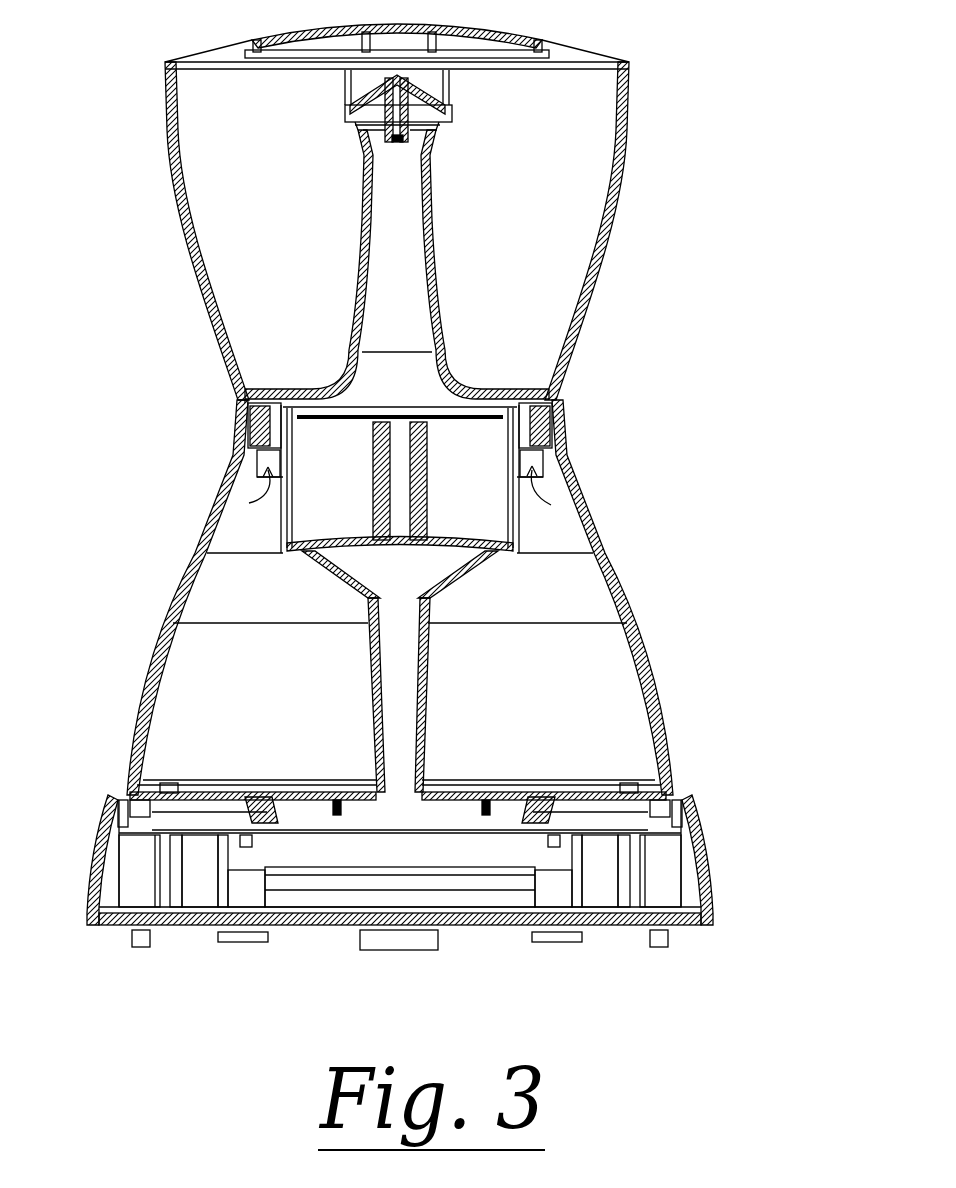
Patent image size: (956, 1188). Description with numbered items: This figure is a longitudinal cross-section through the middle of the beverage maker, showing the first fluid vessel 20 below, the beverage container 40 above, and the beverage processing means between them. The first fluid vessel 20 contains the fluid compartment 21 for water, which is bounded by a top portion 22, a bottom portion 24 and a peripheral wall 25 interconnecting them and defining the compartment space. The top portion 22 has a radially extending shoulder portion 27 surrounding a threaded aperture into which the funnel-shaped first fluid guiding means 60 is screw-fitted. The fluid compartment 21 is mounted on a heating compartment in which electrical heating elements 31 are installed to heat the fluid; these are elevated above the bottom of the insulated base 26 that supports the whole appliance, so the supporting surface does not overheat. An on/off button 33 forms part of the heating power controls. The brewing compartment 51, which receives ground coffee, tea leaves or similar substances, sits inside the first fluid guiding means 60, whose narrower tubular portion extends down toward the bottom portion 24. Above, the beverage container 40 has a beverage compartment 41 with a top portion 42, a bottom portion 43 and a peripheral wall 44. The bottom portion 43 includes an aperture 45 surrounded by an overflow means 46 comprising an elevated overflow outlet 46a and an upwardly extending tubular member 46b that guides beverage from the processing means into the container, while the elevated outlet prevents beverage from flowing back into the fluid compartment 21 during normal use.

The first fluid vessel 20 is at (670, 630).
The fluid compartment 21 is at (277, 704).
The top portion 22 is at (542, 503).
The bottom portion 24 is at (525, 756).
The peripheral wall 25 is at (160, 628).
The insulated base 26 is at (702, 944).
The shoulder portion 27 is at (213, 507).
The electrical heating elements 31 is at (560, 822).
The on/off button 33 is at (213, 823).
The beverage container 40 is at (661, 190).
The beverage compartment 41 is at (530, 219).
The top portion 42 is at (250, 89).
The bottom portion 43 is at (280, 346).
The peripheral wall 44 is at (165, 211).
The aperture 45 is at (412, 330).
The overflow means 46 is at (332, 206).
The elevated overflow outlet 46a is at (325, 133).
The tubular member 46b is at (433, 162).
The brewing compartment 51 is at (344, 479).
The first fluid guiding means 60 is at (448, 661).